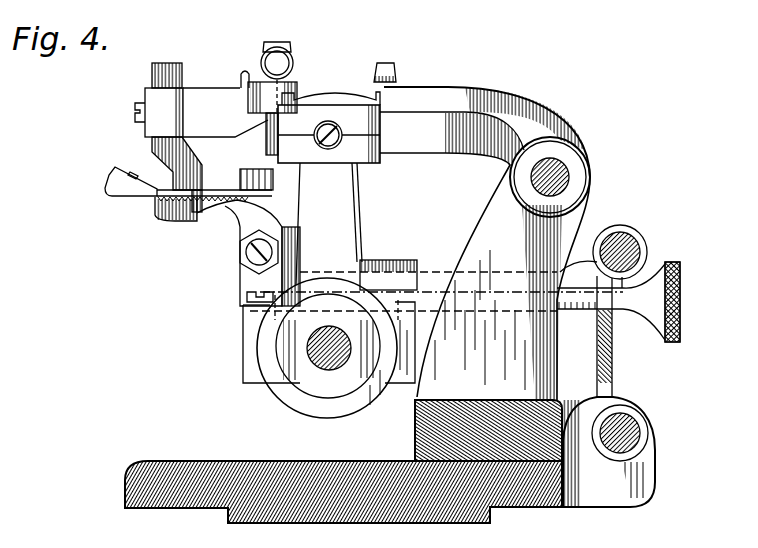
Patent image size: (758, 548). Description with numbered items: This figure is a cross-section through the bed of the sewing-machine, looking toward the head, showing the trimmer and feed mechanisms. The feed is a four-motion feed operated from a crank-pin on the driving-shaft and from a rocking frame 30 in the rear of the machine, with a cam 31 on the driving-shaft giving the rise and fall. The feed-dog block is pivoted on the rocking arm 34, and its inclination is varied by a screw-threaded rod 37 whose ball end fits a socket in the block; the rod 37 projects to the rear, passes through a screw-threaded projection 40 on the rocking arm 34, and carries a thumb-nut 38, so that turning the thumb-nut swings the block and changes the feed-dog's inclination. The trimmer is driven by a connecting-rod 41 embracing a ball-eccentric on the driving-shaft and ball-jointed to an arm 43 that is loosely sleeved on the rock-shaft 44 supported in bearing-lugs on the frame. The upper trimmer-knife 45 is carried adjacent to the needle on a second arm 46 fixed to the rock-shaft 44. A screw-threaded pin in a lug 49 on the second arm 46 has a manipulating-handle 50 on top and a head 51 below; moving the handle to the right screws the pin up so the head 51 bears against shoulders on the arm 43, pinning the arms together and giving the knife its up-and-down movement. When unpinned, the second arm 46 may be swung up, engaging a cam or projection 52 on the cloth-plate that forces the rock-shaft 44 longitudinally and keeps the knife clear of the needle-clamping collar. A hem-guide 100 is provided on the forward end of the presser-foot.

The rocking frame 30 is at (615, 356).
The cam 31 is at (292, 337).
The rocking arm 34 is at (431, 270).
The rod 37 is at (584, 298).
The thumb-nut 38 is at (681, 300).
The screw-threaded projection 40 is at (393, 253).
The connecting-rod 41 is at (337, 219).
The arm 43 is at (430, 147).
The rock-shaft 44 is at (556, 178).
The upper trimmer-knife 45 is at (172, 76).
The second arm 46 is at (436, 96).
The lug 49 is at (242, 80).
The manipulating-handle 50 is at (281, 63).
The head 51 is at (268, 135).
The cam or projection 52 is at (386, 64).
The hem-guide 100 is at (122, 193).